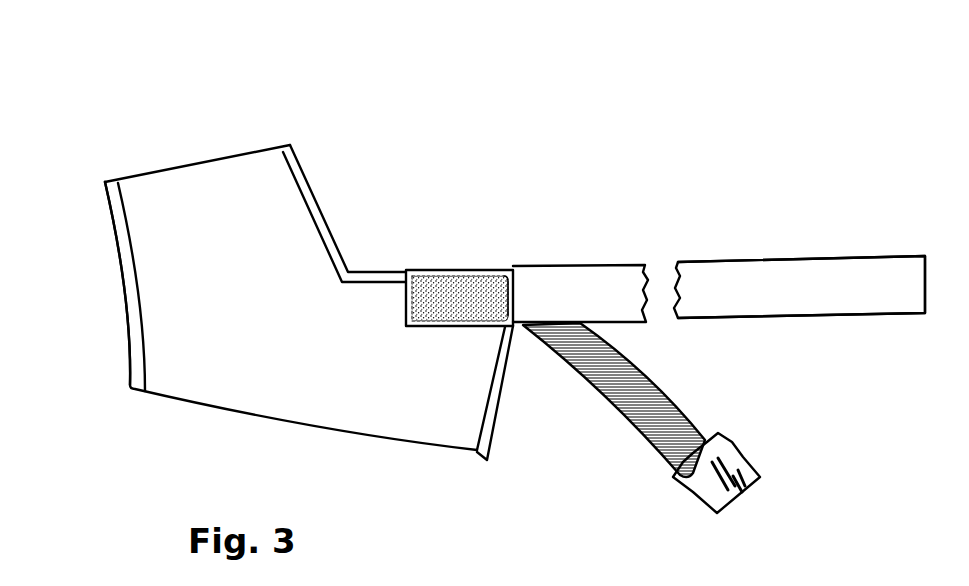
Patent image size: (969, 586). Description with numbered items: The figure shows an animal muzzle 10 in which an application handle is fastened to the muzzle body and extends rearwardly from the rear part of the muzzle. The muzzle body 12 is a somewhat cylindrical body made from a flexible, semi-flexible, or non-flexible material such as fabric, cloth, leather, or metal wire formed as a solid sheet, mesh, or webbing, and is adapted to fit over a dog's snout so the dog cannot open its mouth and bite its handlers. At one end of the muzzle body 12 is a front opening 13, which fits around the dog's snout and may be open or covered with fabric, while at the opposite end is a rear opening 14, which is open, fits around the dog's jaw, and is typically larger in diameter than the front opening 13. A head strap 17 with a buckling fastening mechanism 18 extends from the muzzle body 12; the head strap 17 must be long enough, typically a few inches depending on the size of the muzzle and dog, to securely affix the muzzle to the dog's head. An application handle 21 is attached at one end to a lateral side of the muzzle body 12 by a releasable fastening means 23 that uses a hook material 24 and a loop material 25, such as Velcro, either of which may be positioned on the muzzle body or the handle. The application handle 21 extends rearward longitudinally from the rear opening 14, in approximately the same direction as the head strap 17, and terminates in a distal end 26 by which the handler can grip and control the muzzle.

The muzzle 10 is at (226, 118).
The muzzle body 12 is at (240, 392).
The front opening 13 is at (128, 278).
The rear opening 14 is at (495, 407).
The head strap 17 is at (633, 420).
The buckling fastening mechanism 18 is at (725, 500).
The application handle 21 is at (695, 280).
The releasable fastening means 23 is at (434, 250).
The hook material 24 is at (470, 293).
The loop material 25 is at (490, 277).
The distal end 26 is at (828, 297).